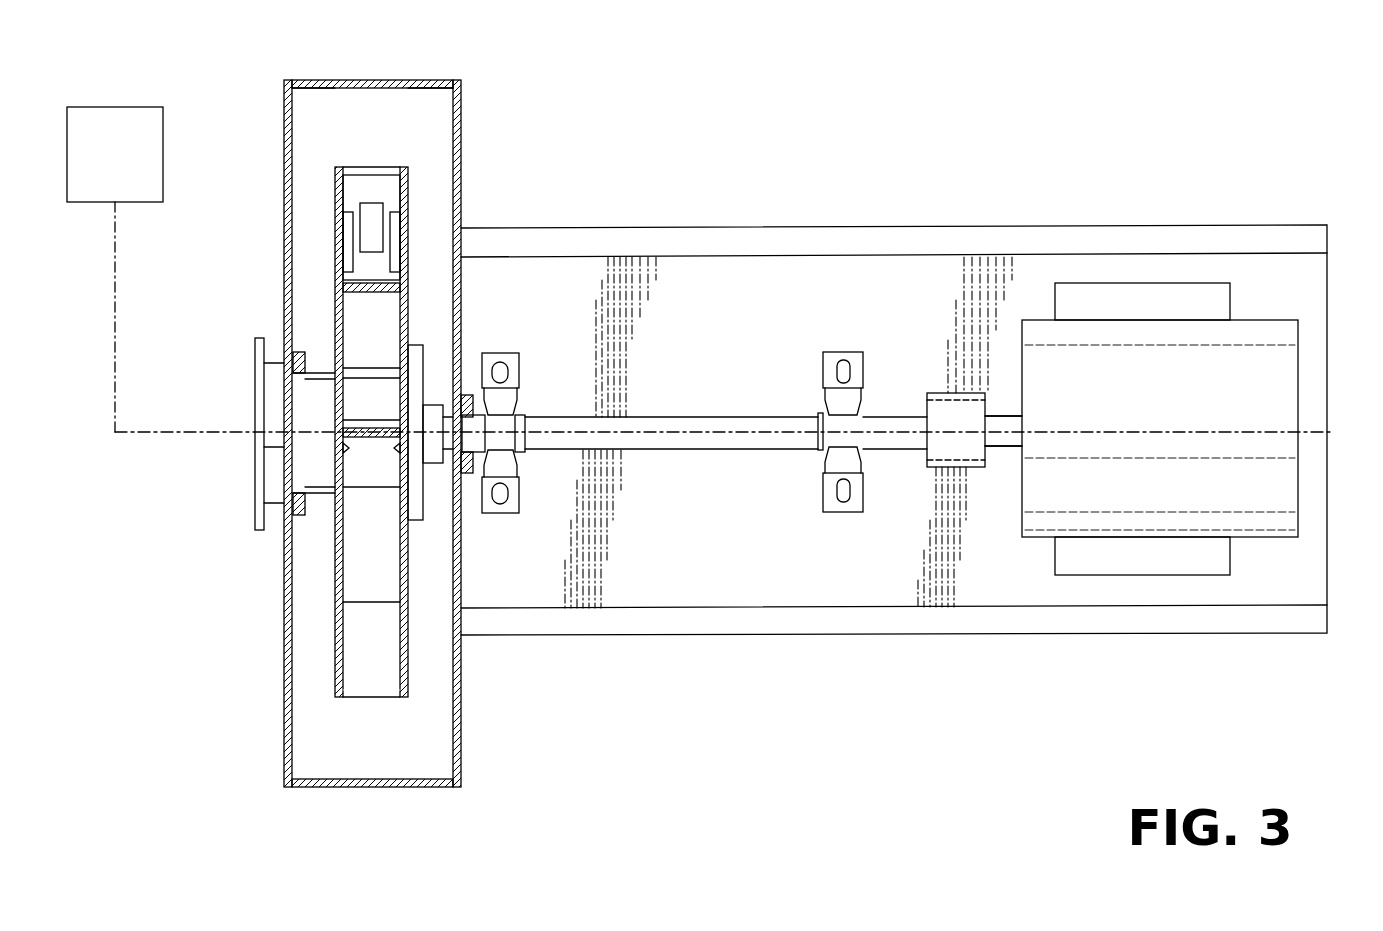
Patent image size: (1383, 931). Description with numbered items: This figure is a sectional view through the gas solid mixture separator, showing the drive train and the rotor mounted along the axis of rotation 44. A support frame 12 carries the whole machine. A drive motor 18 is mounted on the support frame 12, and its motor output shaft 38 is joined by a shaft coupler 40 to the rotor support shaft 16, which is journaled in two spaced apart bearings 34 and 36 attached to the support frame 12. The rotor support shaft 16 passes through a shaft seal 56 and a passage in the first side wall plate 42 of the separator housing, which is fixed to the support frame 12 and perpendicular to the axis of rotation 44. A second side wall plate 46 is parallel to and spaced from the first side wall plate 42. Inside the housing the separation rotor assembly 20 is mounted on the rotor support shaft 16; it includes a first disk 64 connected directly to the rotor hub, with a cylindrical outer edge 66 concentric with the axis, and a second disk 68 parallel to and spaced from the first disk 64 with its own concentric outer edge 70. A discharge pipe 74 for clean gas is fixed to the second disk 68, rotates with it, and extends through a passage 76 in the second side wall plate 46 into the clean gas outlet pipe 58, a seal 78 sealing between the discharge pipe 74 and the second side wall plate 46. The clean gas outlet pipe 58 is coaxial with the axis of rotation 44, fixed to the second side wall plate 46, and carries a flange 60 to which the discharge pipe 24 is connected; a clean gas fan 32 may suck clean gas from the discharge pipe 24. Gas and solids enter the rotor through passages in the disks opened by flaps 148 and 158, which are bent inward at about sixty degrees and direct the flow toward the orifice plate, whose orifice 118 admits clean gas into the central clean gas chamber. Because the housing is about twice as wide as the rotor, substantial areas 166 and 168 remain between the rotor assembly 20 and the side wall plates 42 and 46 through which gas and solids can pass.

The support frame 12 is at (990, 645).
The rotor support shaft 16 is at (750, 417).
The drive motor 18 is at (1282, 390).
The separation rotor assembly 20 is at (318, 668).
The discharge pipe 24 is at (112, 305).
The clean gas fan 32 is at (130, 107).
The bearing 34 is at (846, 352).
The bearing 36 is at (520, 376).
The motor output shaft 38 is at (990, 460).
The shaft coupler 40 is at (927, 455).
The first side wall plate 42 is at (465, 690).
The axis of rotation 44 is at (725, 440).
The second side wall plate 46 is at (285, 760).
The shaft seal 56 is at (462, 473).
The clean gas outlet pipe 58 is at (276, 512).
The flange 60 is at (255, 482).
The first disk 64 is at (405, 182).
The outer edge of first disk 66 is at (405, 698).
The second disk 68 is at (335, 622).
The outer edge of second disk 70 is at (342, 176).
The discharge pipe for clean gas 74 is at (330, 362).
The passage 76 is at (298, 375).
The seal 78 is at (299, 518).
The orifice 118 is at (372, 205).
The flap 148 is at (400, 243).
The flap 158 is at (345, 248).
The area between rotor and side wall plate 166 is at (432, 222).
The area between rotor and side wall plate 168 is at (312, 190).